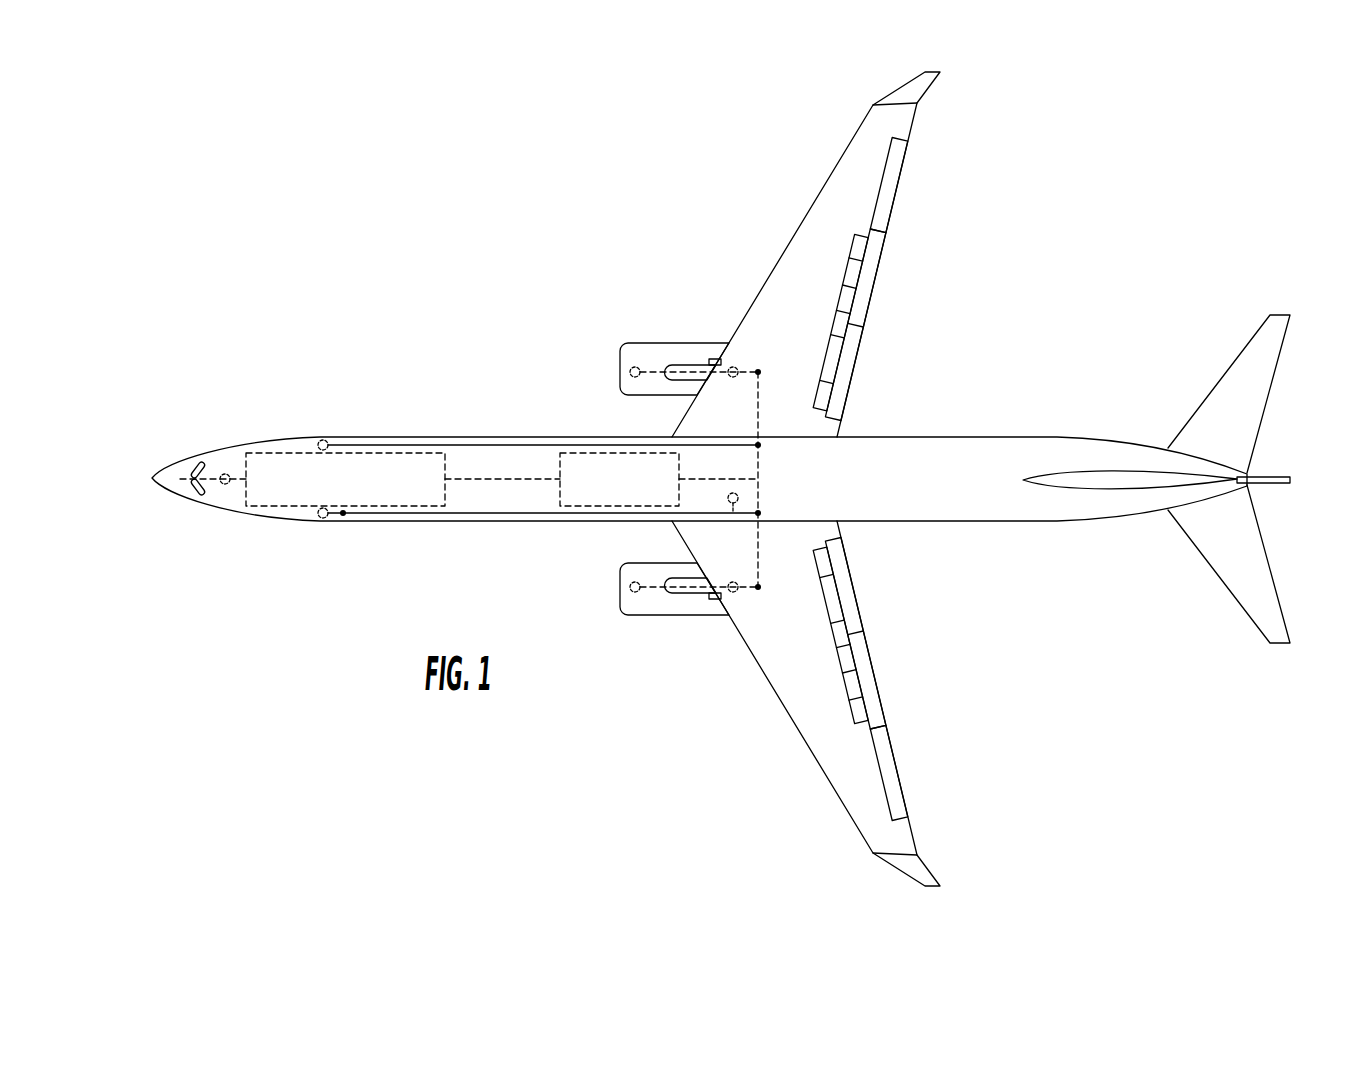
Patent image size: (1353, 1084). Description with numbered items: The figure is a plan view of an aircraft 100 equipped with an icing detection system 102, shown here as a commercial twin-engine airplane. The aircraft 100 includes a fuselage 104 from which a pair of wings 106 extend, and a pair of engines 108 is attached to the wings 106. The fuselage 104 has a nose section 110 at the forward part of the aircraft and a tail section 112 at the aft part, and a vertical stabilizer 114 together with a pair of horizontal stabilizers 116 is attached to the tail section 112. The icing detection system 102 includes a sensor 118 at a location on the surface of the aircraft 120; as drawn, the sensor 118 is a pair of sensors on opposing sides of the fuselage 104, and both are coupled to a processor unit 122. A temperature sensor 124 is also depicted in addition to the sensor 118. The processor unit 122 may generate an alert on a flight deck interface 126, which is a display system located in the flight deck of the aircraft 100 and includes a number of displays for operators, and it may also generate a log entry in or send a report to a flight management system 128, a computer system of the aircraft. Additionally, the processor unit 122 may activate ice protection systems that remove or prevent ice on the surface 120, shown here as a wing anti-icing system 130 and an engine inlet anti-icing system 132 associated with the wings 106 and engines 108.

The aircraft 100 is at (453, 320).
The icing detection system 102 is at (503, 568).
The fuselage 104 is at (430, 437).
The wings 106 is at (766, 282).
The engines 108 is at (680, 343).
The nose section 110 is at (134, 474).
The tail section 112 is at (1127, 599).
The vertical stabilizer 114 is at (1272, 476).
The horizontal stabilizers 116 is at (1230, 365).
The sensor 118 is at (318, 441).
The surface of the aircraft 120 is at (944, 490).
The processor unit 122 is at (585, 453).
The temperature sensor 124 is at (739, 495).
The flight deck interface 126 is at (225, 486).
The flight management system 128 is at (375, 452).
The wing anti-icing system 130 is at (738, 366).
The engine inlet anti-icing system 132 is at (629, 372).